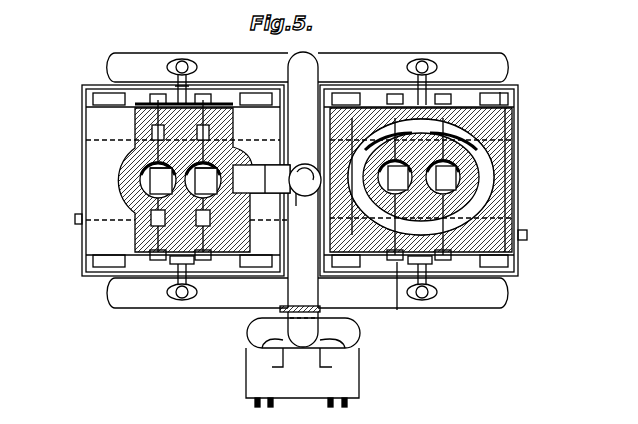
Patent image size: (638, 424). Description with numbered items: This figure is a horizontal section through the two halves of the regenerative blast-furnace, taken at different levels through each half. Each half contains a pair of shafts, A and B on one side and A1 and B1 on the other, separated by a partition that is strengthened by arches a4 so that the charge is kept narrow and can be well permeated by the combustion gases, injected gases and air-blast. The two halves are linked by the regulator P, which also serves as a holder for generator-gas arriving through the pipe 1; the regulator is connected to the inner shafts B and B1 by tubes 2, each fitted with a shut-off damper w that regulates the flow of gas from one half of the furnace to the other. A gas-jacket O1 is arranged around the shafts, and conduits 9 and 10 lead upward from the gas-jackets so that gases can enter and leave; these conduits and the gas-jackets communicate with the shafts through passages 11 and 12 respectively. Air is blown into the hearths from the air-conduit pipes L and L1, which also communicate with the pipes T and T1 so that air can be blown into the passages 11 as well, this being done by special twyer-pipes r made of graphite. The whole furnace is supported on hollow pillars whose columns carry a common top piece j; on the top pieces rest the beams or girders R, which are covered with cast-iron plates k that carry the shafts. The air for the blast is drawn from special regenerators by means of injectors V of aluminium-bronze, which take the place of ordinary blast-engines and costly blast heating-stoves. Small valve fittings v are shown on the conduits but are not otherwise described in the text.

The air-conduit pipe L is at (197, 180).
The air-conduit pipe L1 is at (413, 180).
The regulator P is at (300, 199).
The top piece j is at (530, 288).
The cast-iron plate k is at (107, 92).
The pipe 1 is at (152, 136).
The conduit 9 is at (152, 130).
The conduit 10 is at (209, 130).
The shaft A is at (158, 180).
The shaft B is at (203, 180).
The passage 11 is at (306, 177).
The passage 12 is at (300, 198).
The tube 2 is at (243, 180).
The shut-off damper w is at (273, 179).
The gas-jacket O1 is at (543, 160).
The twyer-pipe r is at (301, 204).
The arch a4 is at (460, 140).
The shaft B1 is at (395, 186).
The shaft A1 is at (443, 186).
The valve v is at (300, 175).
The pipe T is at (182, 315).
The pipe T1 is at (423, 60).
The beam or girder R is at (505, 90).
The injector V is at (303, 362).